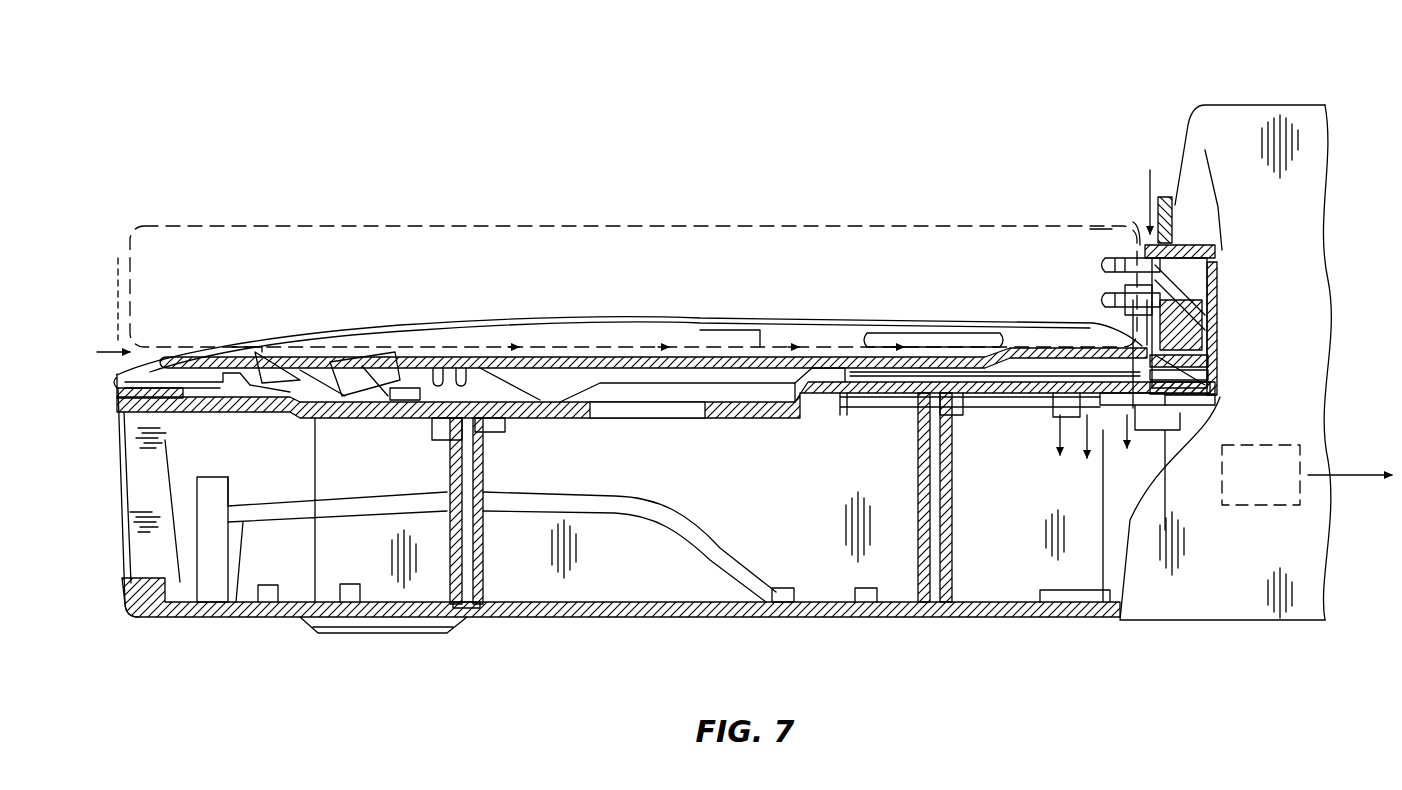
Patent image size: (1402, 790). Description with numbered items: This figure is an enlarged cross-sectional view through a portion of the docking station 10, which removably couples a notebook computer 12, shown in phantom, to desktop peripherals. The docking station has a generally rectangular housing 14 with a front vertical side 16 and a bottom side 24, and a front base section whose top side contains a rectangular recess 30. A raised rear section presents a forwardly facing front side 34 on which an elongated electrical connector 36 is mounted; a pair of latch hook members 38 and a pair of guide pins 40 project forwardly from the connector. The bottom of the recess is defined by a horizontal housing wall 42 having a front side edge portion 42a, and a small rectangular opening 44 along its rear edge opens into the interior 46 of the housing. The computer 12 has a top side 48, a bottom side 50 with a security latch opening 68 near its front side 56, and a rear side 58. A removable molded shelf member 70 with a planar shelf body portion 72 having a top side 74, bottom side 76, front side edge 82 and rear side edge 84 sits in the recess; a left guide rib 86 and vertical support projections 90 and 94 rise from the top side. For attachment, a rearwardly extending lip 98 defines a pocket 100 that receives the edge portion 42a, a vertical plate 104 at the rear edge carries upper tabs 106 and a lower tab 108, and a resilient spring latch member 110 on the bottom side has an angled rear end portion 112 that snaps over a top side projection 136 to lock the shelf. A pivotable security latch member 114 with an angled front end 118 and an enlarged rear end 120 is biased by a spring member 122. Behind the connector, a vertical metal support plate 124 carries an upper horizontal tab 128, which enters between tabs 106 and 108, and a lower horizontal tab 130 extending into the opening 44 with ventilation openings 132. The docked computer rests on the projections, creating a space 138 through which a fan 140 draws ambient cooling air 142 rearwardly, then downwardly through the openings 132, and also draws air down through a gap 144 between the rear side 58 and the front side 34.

The docking station 10 is at (1200, 88).
The notebook computer 12 is at (905, 214).
The housing 14 is at (1212, 588).
The front vertical side 16 is at (126, 548).
The bottom side 24 is at (522, 620).
The rectangular recess 30 is at (240, 419).
The front side 34 is at (1172, 205).
The electrical connector 36 is at (1200, 292).
The latch hook members 38 is at (1104, 265).
The guide pins 40 is at (1104, 300).
The horizontal housing wall 42 is at (388, 406).
The front side edge portion 42a is at (132, 437).
The rectangular opening 44 is at (1045, 407).
The interior 46 is at (1000, 586).
The top side 48 is at (626, 226).
The bottom side 50 is at (618, 419).
The front side 56 is at (126, 262).
The rear side 58 is at (1136, 226).
The security latch opening 68 is at (318, 419).
The shelf member 70 is at (762, 344).
The shelf body portion 72 is at (668, 402).
The top side 74 is at (545, 357).
The bottom side 76 is at (745, 419).
The front side edge 82 is at (116, 382).
The rear side edge 84 is at (1202, 386).
The left guide rib 86 is at (630, 320).
The vertical support projection 90 is at (235, 346).
The vertical support projection 94 is at (1012, 346).
The lip 98 is at (130, 470).
The pocket 100 is at (122, 396).
The vertical plate 104 is at (1140, 340).
The upper tabs 106 is at (1210, 323).
The lower tab 108 is at (1215, 374).
The spring latch member 110 is at (518, 348).
The angled rear end portion 112 is at (502, 419).
The security latch member 114 is at (355, 350).
The angled front end 118 is at (258, 345).
The rear end 120 is at (385, 352).
The spring member 122 is at (440, 440).
The vertical metal support plate 124 is at (1214, 305).
The upper horizontal tab 128 is at (1215, 347).
The lower horizontal tab 130 is at (1145, 422).
The ventilation openings 132 is at (1047, 428).
The top side projection 136 is at (510, 440).
The space 138 is at (800, 350).
The fan 140 is at (1248, 508).
The ambient cooling air 142 is at (1192, 512).
The gap 144 is at (1165, 232).